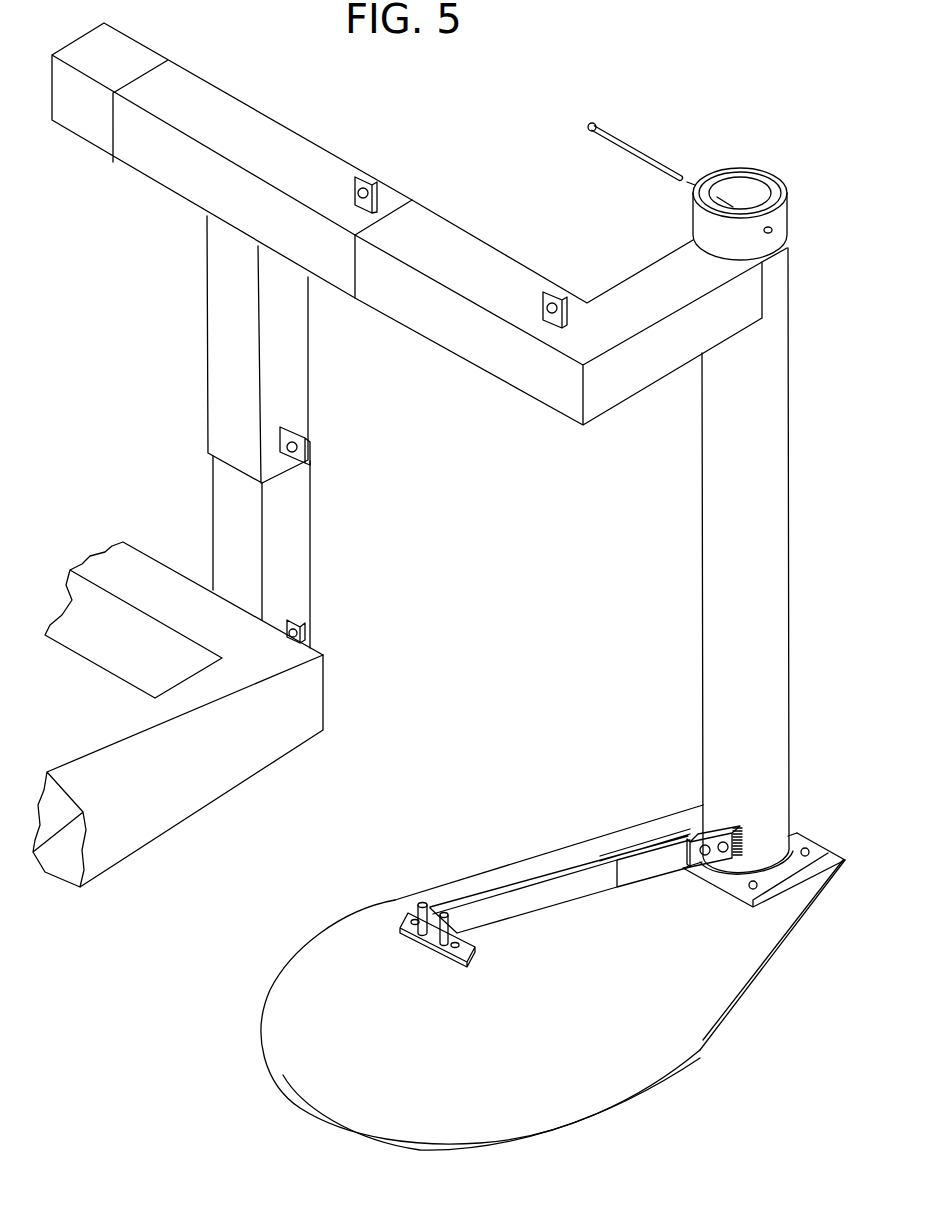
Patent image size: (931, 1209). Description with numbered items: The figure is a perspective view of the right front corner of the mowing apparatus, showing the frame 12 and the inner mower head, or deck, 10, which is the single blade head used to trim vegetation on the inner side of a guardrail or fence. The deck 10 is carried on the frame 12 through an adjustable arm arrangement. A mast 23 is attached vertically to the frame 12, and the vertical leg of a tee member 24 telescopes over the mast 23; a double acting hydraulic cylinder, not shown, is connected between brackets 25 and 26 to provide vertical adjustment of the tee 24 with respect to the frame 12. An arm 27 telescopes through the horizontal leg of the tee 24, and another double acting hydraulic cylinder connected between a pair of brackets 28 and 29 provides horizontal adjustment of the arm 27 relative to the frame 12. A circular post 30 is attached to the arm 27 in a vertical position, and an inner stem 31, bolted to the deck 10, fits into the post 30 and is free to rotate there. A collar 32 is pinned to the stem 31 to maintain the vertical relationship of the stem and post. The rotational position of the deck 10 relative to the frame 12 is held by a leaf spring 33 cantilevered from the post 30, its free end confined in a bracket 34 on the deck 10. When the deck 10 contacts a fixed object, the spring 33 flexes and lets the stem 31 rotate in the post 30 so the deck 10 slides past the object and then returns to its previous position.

The first head 10 is at (513, 1071).
The frame 12 is at (149, 762).
The mast 23 is at (252, 566).
The tee member 24 is at (276, 233).
The bracket 25 is at (310, 448).
The bracket 26 is at (303, 625).
The arm 27 is at (477, 287).
The bracket 28 is at (370, 185).
The bracket 29 is at (560, 300).
The circular post 30 is at (763, 578).
The stem 31 is at (740, 878).
The collar 32 is at (723, 170).
The leaf spring 33 is at (522, 915).
The bracket 34 is at (450, 958).